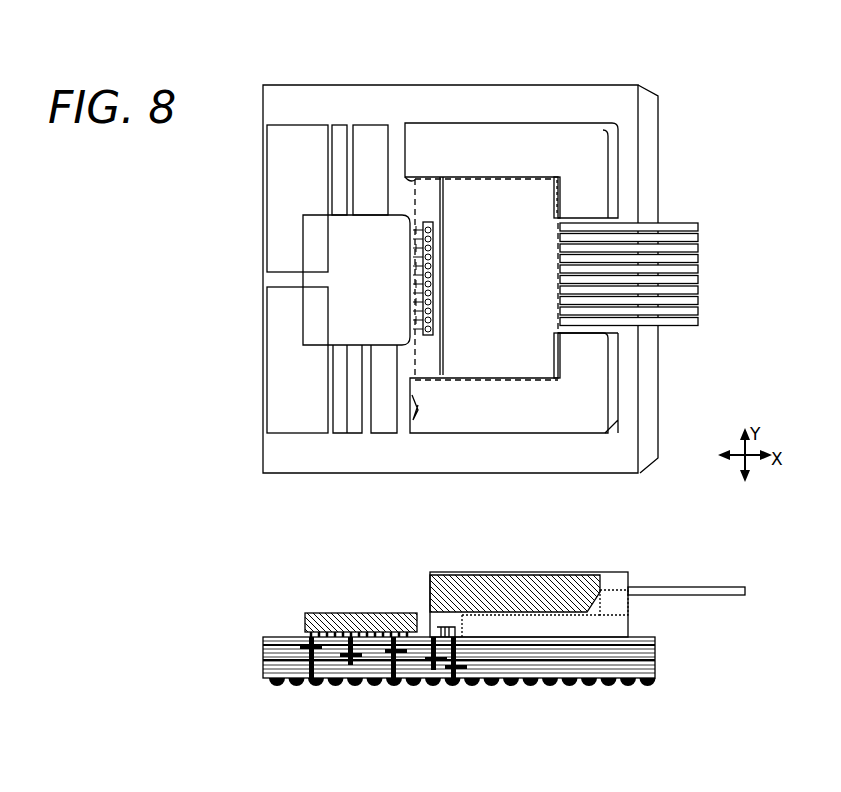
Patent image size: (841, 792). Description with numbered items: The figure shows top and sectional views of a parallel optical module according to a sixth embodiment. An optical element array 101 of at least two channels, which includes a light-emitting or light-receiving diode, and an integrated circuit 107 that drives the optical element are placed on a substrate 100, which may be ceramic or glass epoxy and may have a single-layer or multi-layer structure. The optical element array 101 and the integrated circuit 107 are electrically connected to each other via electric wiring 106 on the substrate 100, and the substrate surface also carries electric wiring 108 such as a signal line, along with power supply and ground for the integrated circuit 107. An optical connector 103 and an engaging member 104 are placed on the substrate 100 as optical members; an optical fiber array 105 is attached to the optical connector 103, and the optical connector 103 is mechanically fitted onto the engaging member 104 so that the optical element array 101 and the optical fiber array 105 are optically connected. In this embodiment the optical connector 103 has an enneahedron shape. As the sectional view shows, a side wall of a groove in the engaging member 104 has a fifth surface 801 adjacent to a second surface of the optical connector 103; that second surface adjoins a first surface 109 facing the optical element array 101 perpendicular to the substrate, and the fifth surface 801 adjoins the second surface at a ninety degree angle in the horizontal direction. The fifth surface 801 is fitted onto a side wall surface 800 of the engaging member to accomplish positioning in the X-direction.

The substrate 100 is at (435, 103).
The optical element array 101 is at (430, 337).
The optical connector 103 is at (420, 198).
The engaging member 104 is at (547, 413).
The optical fiber array 105 is at (683, 326).
The electric wiring 106 is at (408, 343).
The integrated circuit 107 is at (337, 302).
The electric wiring 108 is at (298, 168).
The first surface 109 is at (418, 690).
The side wall surface 800 is at (557, 197).
The fifth surface 801 is at (590, 575).